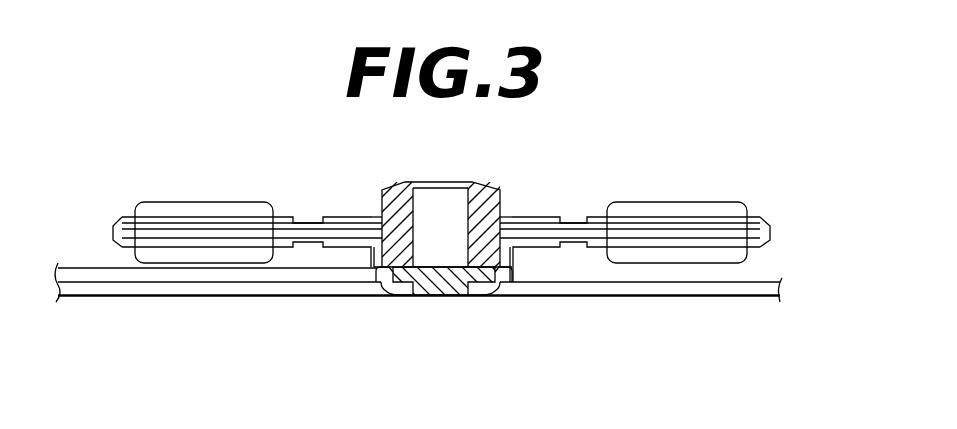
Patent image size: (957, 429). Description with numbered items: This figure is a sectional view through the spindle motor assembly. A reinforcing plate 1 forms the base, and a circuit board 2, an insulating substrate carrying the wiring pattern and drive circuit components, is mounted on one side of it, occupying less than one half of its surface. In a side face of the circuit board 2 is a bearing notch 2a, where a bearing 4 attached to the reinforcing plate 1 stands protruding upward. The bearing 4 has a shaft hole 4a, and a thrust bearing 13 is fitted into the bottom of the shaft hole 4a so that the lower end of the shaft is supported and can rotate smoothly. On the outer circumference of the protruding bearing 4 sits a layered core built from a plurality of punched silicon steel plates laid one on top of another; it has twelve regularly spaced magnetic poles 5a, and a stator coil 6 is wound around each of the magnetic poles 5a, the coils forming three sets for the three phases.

The reinforcing plate 1 is at (323, 290).
The circuit board 2 is at (152, 275).
The bearing notch 2a is at (383, 283).
The bearing 4 is at (490, 193).
The shaft hole 4a is at (427, 205).
The magnetic poles 5a is at (763, 222).
The stator coil 6 is at (207, 205).
The thrust bearing 13 is at (455, 288).